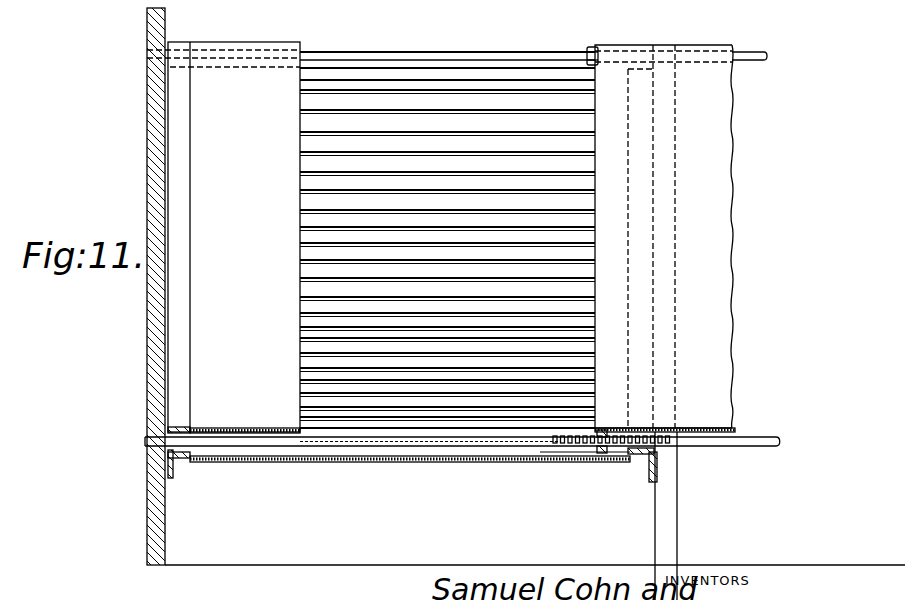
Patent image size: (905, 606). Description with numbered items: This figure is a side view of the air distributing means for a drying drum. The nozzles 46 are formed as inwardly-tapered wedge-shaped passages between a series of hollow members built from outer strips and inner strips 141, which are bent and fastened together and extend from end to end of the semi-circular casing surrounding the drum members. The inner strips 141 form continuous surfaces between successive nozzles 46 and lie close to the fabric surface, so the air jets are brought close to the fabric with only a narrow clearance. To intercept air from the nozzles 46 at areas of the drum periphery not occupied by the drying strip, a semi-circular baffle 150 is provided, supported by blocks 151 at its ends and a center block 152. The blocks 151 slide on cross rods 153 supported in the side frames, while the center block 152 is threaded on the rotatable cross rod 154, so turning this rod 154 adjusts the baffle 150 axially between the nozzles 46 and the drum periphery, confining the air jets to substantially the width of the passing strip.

The nozzles 46 is at (326, 152).
The inner strips 141 is at (310, 288).
The semi-circular baffle 150 is at (735, 221).
The blocks 151 is at (591, 46).
The center block 152 is at (601, 455).
The cross rods 153 is at (485, 51).
The rotatable cross rod 154 is at (560, 447).